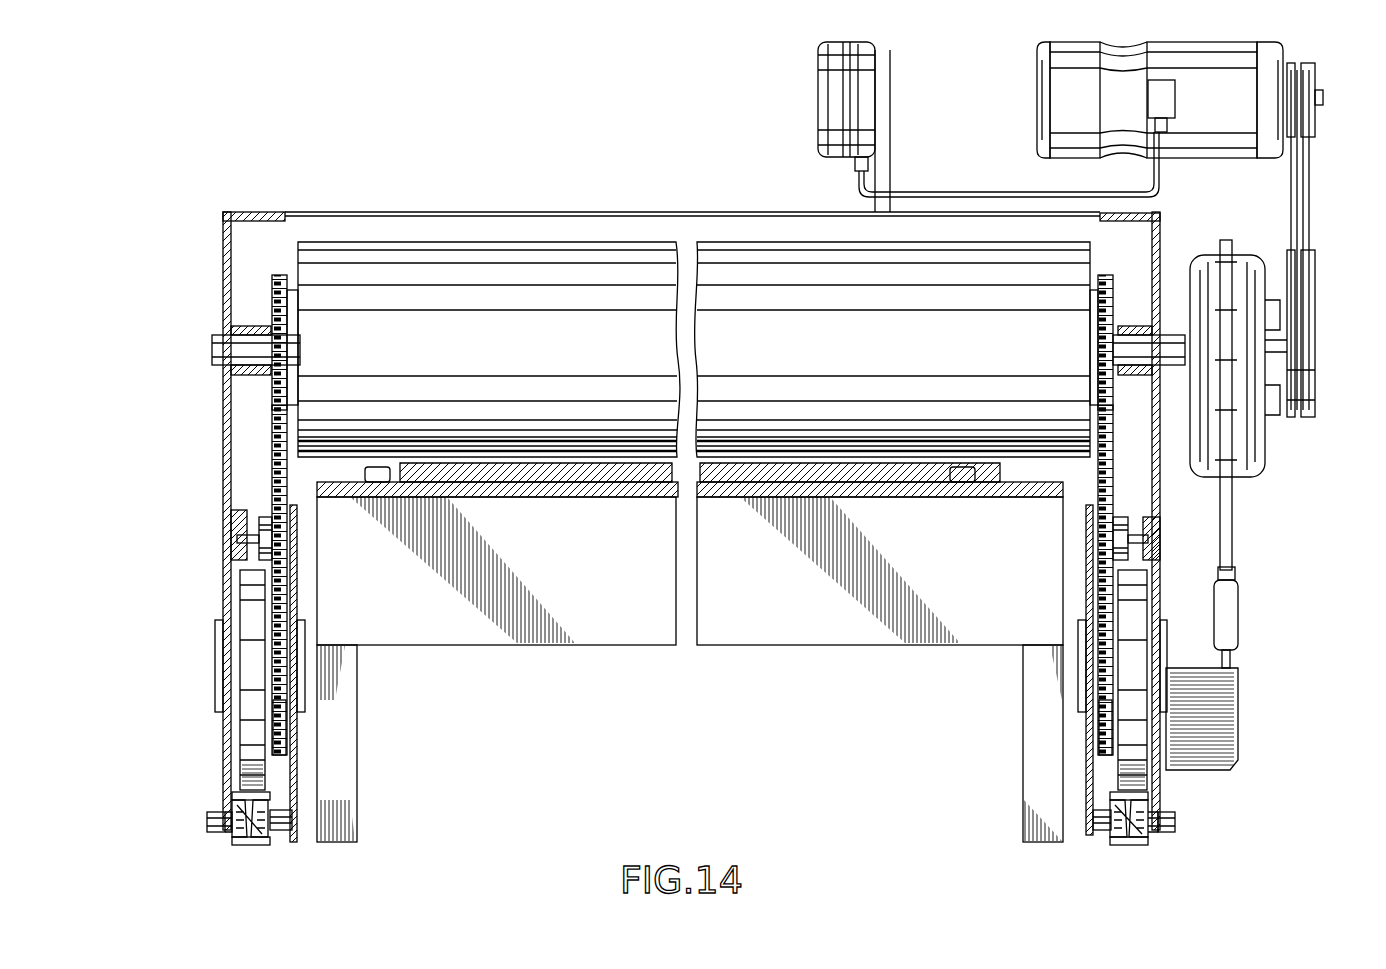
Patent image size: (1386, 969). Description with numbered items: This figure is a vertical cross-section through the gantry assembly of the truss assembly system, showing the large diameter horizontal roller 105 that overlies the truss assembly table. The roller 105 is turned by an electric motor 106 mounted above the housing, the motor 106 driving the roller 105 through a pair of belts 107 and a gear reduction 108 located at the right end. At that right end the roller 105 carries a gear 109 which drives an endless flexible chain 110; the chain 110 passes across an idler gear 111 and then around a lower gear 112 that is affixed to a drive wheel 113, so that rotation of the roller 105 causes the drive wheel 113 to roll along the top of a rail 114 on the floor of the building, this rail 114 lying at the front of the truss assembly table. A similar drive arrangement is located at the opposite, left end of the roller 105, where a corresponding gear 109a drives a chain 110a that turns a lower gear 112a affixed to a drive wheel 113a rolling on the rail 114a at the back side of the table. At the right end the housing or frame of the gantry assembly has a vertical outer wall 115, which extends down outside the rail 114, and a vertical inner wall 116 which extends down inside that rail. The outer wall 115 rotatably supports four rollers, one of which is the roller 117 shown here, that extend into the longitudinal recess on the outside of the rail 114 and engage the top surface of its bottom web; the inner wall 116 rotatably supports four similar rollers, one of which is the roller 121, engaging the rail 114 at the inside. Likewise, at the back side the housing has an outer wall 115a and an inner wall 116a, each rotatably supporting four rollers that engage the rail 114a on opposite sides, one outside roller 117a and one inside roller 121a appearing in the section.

The horizontal roller 105 is at (572, 351).
The electric motor 106 is at (1204, 68).
The belts 107 is at (1309, 214).
The gear reduction 108 is at (1258, 455).
The gear 109 is at (1102, 285).
The gear 109a is at (274, 292).
The endless flexible chain 110 is at (1112, 455).
The endless flexible chain 110a is at (277, 500).
The idler gear 111 is at (1122, 516).
The lower gear 112 is at (1103, 752).
The lower gear 112a is at (283, 742).
The drive wheel 113 is at (1140, 742).
The drive wheel 113a is at (247, 745).
The rail 114 is at (1136, 845).
The rail 114a is at (256, 845).
The vertical outer wall 115 is at (1160, 500).
The outer wall 115a is at (229, 446).
The vertical inner wall 116 is at (1087, 565).
The inner wall 116a is at (303, 598).
The roller 117 is at (1175, 822).
The outside roller 117a is at (220, 832).
The roller 121 is at (1100, 834).
The inside roller 121a is at (286, 836).